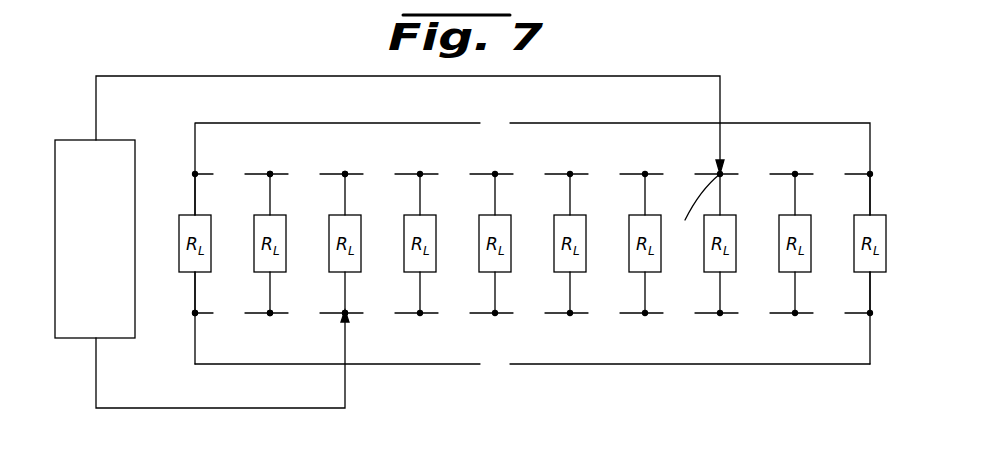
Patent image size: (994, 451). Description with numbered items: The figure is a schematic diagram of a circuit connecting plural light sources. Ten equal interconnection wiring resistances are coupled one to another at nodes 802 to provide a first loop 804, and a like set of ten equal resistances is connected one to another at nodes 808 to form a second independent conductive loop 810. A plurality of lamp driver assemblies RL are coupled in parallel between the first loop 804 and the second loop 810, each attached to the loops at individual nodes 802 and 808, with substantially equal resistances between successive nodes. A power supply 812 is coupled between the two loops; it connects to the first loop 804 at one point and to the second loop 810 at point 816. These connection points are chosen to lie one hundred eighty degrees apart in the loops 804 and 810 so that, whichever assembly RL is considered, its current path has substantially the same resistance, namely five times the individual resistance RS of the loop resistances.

The node 802 is at (272, 176).
The first loop 804 is at (800, 125).
The node 808 is at (195, 313).
The second independent conductive loop 810 is at (745, 365).
The power supply 812 is at (65, 148).
The point 816 is at (347, 310).